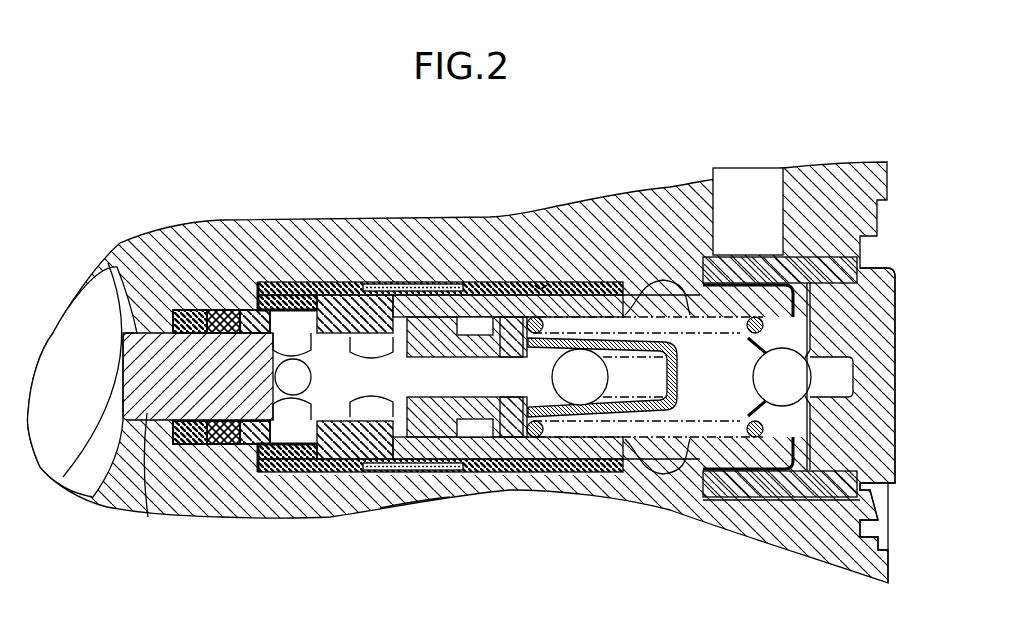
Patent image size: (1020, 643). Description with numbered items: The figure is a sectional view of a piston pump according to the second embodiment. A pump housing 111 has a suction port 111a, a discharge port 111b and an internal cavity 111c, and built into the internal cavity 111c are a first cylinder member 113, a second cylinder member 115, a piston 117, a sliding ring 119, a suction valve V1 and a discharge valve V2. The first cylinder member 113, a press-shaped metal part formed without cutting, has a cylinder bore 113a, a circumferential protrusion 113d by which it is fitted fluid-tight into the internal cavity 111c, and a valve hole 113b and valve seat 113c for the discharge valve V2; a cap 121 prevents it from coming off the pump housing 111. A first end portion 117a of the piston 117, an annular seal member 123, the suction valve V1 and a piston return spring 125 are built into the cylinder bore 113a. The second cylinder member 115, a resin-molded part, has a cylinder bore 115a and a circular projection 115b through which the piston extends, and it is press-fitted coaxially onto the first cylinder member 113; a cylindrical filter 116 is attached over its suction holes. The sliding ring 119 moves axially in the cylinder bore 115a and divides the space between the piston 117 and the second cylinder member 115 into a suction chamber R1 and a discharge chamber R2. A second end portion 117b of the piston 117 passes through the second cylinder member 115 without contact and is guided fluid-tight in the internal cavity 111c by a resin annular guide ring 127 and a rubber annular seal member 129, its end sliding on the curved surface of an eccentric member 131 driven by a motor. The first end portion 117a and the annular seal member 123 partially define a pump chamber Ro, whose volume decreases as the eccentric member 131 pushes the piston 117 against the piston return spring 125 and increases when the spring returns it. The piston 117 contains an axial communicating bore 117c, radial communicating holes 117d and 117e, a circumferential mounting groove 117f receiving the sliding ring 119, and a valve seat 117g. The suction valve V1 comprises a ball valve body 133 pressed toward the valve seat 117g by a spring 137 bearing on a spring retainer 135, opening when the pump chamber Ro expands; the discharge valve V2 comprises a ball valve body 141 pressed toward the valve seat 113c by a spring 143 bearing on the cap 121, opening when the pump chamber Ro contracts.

The pump housing 111 is at (147, 243).
The suction port 111a is at (410, 500).
The discharge port 111b is at (748, 190).
The internal cavity 111c is at (541, 284).
The first cylinder member 113 is at (562, 412).
The cylinder bore 113a is at (548, 430).
The valve hole 113b is at (755, 395).
The valve seat 113c is at (752, 368).
The circumferential protrusion 113d is at (662, 300).
The second cylinder member 115 is at (258, 425).
The cylinder bore 115a is at (322, 445).
The circular projection 115b is at (262, 330).
The filter 116 is at (440, 475).
The piston 117 is at (232, 460).
The first end portion 117a is at (512, 475).
The second end portion 117b is at (148, 470).
The communicating bore 117c is at (490, 305).
The communicating hole 117d is at (400, 335).
The communicating hole 117e is at (293, 316).
The mounting groove 117f is at (395, 472).
The valve seat 117g is at (567, 447).
The sliding ring 119 is at (325, 320).
The cap 121 is at (843, 273).
The annular seal member 123 is at (472, 442).
The piston return spring 125 is at (757, 485).
The annular guide ring 127 is at (192, 308).
The annular seal member 129 is at (208, 310).
The eccentric member 131 is at (55, 452).
The ball valve body 133 is at (618, 430).
The spring retainer 135 is at (676, 475).
The spring 137 is at (640, 415).
The ball valve body 141 is at (790, 495).
The spring 143 is at (845, 495).
The suction chamber R1 is at (432, 450).
The discharge chamber R2 is at (282, 445).
The pump chamber Ro is at (700, 465).
The suction valve V1 is at (585, 362).
The discharge valve V2 is at (790, 362).